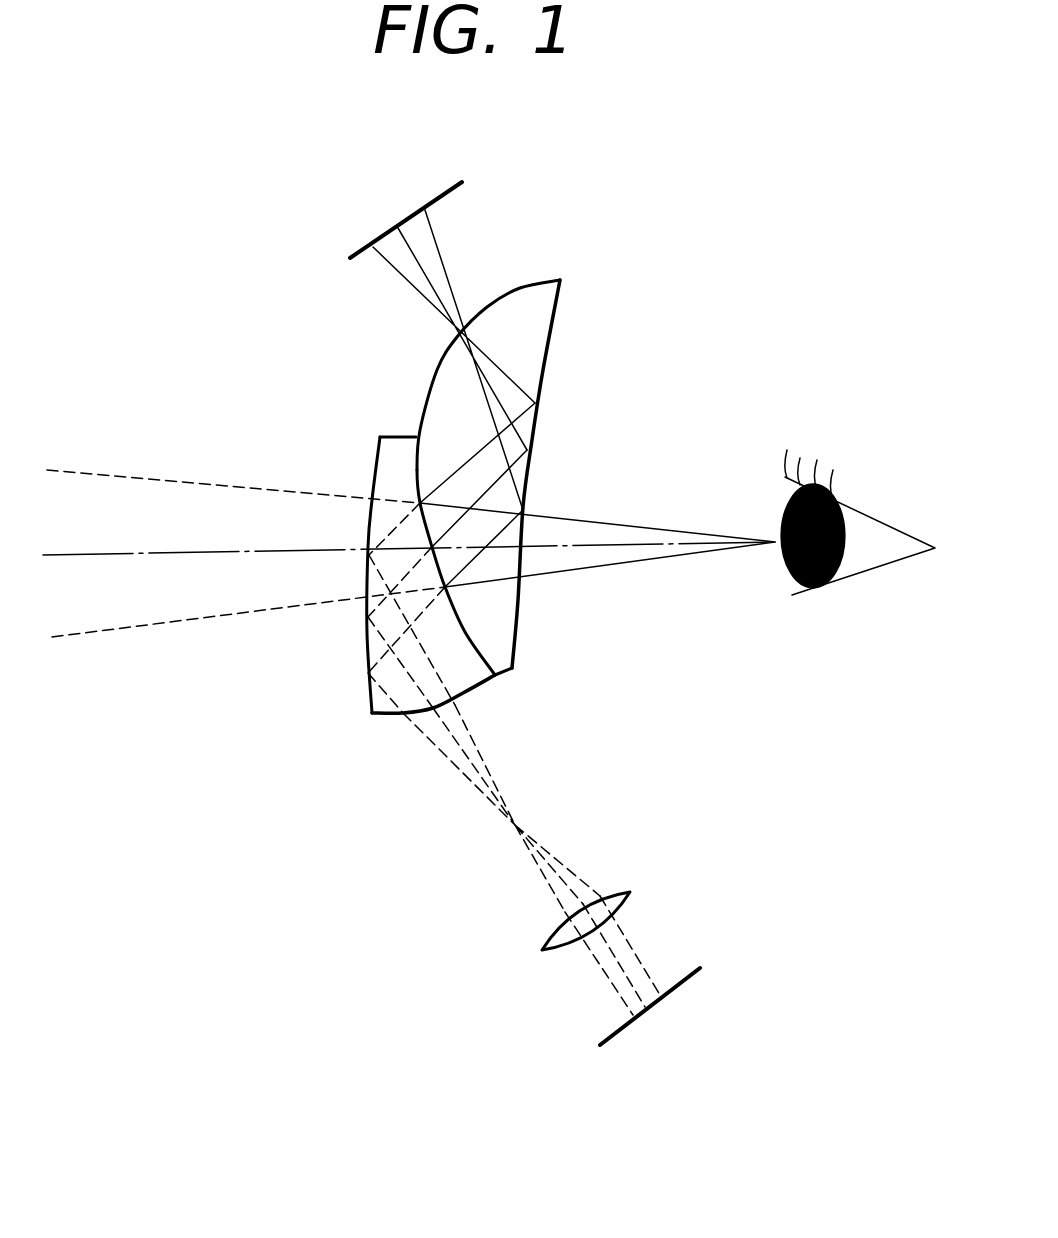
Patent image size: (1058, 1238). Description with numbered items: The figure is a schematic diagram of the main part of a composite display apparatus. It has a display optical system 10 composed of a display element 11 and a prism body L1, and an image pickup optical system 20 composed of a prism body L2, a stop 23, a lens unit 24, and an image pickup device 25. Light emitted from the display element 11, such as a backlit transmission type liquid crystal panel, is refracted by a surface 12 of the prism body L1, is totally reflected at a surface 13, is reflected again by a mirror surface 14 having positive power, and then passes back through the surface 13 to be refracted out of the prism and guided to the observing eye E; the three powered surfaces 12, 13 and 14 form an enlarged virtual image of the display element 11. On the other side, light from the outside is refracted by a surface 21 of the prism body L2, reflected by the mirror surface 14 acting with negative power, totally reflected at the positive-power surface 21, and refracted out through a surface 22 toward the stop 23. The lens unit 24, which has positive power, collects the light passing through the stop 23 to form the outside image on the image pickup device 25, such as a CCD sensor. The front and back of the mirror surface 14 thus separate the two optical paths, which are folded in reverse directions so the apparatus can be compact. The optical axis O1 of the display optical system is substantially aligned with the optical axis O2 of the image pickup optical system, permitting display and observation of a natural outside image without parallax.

The display optical system 10 is at (655, 302).
The display element 11 is at (412, 217).
The surface 12 is at (520, 287).
The surface 13 is at (553, 338).
The mirror surface 14 is at (478, 647).
The prism body L1 is at (503, 600).
The prism body L2 is at (367, 645).
The image pickup optical system 20 is at (387, 883).
The surface 21 is at (365, 572).
The surface 22 is at (398, 718).
The stop 23 is at (470, 862).
The lens unit 24 is at (630, 892).
The image pickup device 25 is at (683, 975).
The optical axis of the display optical system O1 is at (637, 545).
The optical axis of the image pickup optical system O2 is at (155, 548).
The observing eye E is at (872, 572).